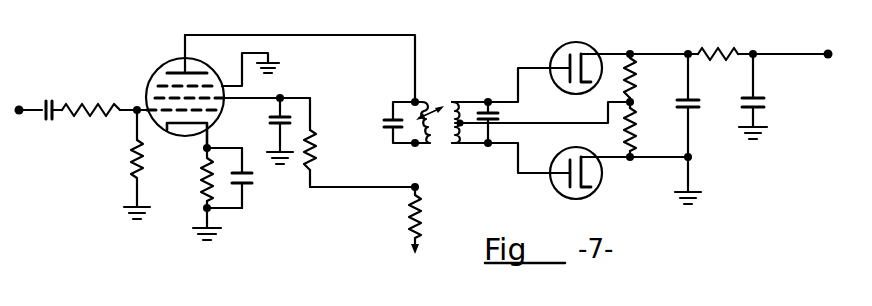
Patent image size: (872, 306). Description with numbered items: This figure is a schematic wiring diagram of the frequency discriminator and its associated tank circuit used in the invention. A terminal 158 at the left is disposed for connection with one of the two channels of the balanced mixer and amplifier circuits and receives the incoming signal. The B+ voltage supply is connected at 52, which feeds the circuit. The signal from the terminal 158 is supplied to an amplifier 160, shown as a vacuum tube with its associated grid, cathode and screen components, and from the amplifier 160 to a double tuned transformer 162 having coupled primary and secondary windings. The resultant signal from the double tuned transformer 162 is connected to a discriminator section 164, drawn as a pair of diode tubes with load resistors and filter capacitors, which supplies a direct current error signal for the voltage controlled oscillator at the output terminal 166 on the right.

The B+ voltage supply connection 52 is at (409, 253).
The terminal 158 is at (13, 108).
The amplifier 160 is at (160, 55).
The double tuned transformer 162 is at (462, 80).
The discriminator section 164 is at (585, 117).
The terminal 166 is at (843, 38).